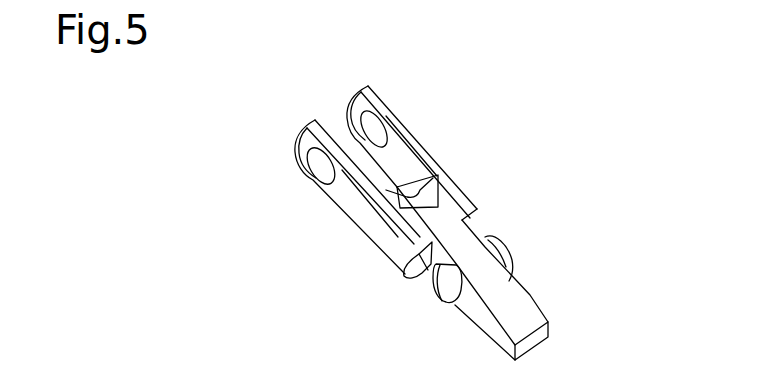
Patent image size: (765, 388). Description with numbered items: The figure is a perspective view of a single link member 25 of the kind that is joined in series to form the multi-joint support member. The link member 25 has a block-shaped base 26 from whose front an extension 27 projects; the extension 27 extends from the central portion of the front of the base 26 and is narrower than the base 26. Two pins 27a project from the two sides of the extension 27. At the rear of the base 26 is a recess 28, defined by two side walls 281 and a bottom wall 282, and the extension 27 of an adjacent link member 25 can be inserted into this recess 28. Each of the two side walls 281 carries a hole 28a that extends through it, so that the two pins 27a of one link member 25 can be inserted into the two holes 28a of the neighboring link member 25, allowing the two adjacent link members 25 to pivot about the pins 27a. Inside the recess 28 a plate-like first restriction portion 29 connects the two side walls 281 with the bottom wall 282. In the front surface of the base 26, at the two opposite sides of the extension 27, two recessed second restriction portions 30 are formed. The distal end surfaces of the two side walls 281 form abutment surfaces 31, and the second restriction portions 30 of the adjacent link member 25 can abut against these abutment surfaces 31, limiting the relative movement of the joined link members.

The link member 25 is at (524, 138).
The base 26 is at (464, 196).
The extension 27 is at (524, 301).
The pins 27a is at (435, 305).
The recess 28 is at (392, 148).
The holes 28a is at (388, 116).
The side walls 281 is at (417, 149).
The bottom wall 282 is at (362, 233).
The first restriction portion 29 is at (434, 181).
The second restriction portions 30 is at (410, 259).
The abutment surfaces 31 is at (346, 110).